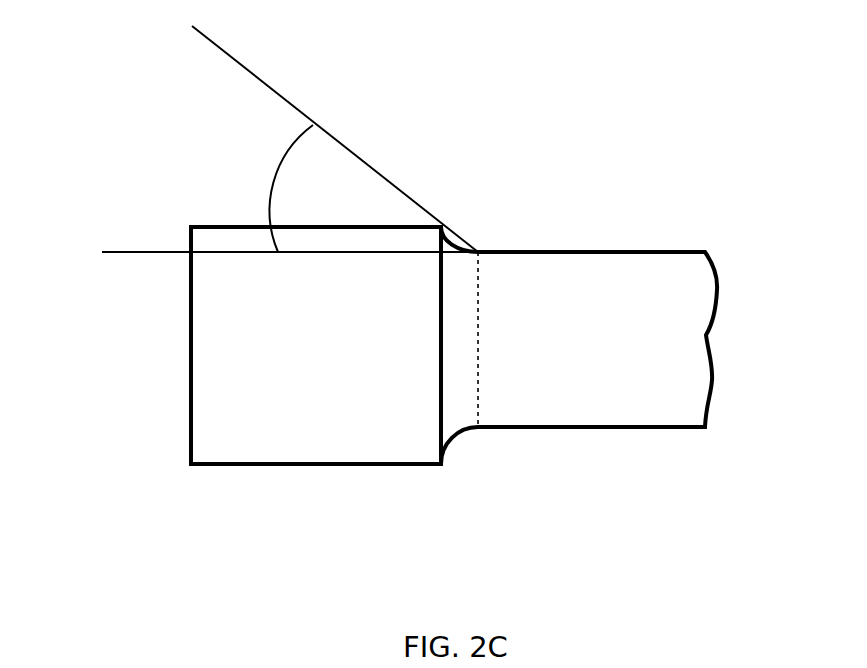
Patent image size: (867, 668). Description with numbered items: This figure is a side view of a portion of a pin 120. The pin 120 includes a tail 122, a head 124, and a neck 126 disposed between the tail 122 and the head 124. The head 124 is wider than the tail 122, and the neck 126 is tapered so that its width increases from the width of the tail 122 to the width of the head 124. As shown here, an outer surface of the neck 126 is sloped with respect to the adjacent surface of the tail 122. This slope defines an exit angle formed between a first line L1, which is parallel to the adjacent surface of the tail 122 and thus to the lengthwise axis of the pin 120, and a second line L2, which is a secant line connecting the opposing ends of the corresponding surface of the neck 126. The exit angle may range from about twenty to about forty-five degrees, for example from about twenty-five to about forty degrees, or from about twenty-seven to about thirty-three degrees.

The pin 120 is at (598, 184).
The tail 122 is at (617, 363).
The head 124 is at (190, 347).
The neck 126 is at (453, 377).
The first line L1 is at (153, 250).
The second line L2 is at (353, 152).